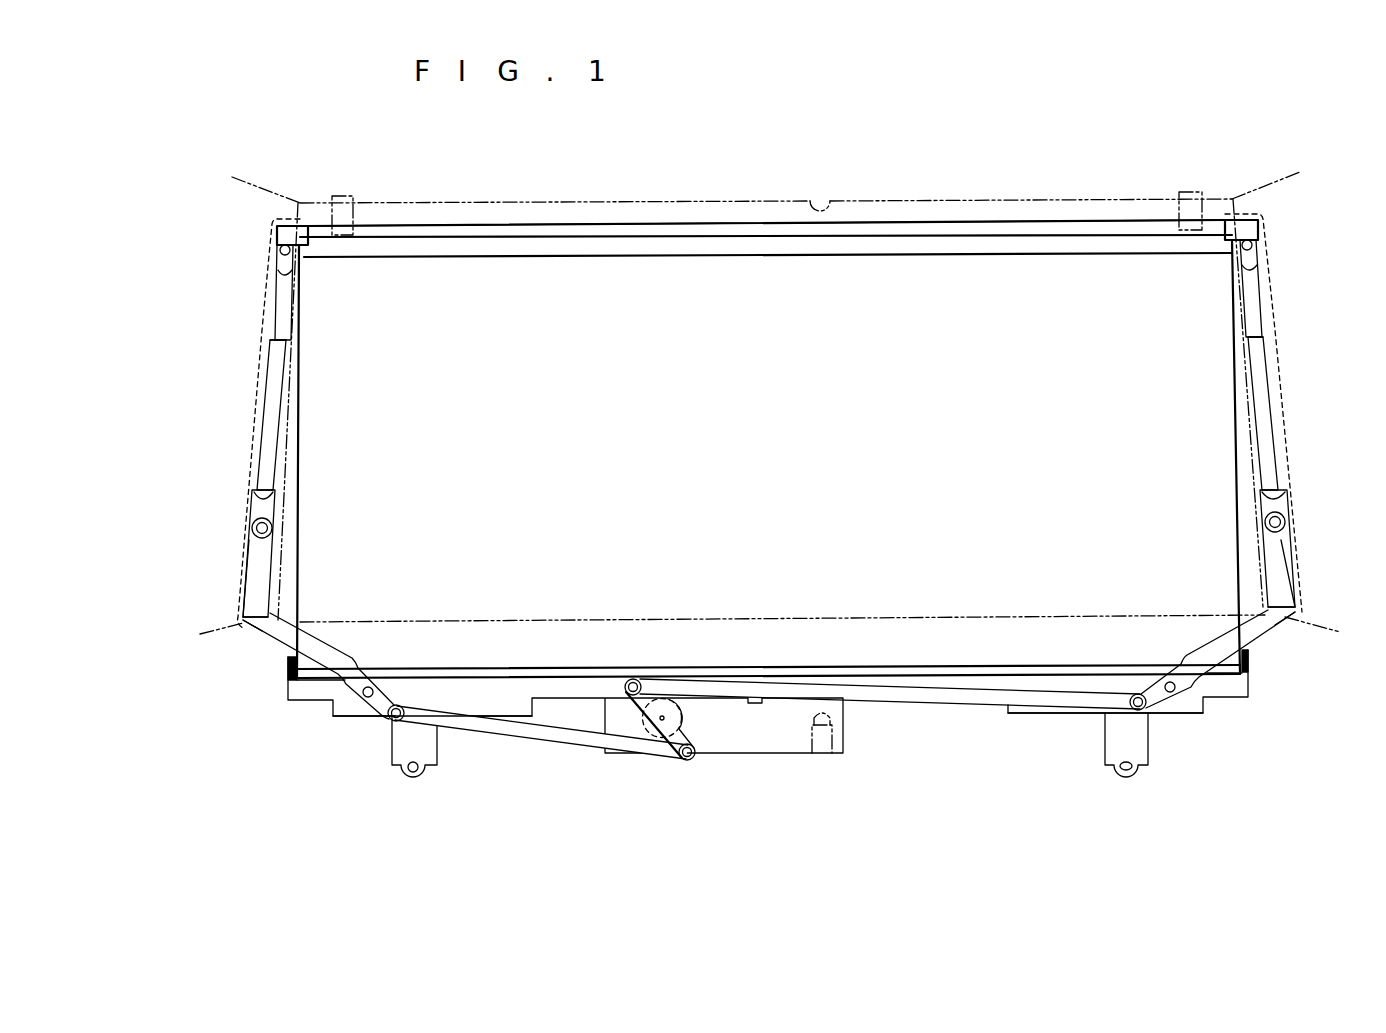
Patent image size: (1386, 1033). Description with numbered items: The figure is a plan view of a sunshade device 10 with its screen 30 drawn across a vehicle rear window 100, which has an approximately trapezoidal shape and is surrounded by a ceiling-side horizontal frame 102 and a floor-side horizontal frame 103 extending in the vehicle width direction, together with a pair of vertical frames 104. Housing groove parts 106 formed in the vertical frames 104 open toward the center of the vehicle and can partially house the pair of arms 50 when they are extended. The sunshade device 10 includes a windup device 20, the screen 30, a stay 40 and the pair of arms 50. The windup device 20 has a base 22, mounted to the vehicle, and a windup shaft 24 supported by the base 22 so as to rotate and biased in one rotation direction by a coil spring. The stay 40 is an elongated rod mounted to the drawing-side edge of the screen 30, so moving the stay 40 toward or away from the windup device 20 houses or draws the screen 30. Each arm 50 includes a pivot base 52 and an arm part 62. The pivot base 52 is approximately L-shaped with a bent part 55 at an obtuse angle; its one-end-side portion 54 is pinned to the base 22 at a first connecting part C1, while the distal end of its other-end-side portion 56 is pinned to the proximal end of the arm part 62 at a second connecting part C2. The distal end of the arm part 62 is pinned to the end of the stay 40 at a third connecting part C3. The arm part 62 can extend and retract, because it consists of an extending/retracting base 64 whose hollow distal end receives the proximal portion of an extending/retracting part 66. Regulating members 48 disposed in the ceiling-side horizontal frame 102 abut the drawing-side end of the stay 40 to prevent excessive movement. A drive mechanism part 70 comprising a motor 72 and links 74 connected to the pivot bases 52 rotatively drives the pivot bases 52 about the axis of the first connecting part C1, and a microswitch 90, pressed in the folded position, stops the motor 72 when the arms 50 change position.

The sunshade device 10 is at (482, 765).
The windup device 20 is at (286, 689).
The base 22 is at (1033, 715).
The windup shaft 24 is at (1232, 683).
The screen 30 is at (1237, 458).
The stay 40 is at (725, 224).
The regulating member 48 is at (336, 196).
The arm 50 is at (258, 421).
The pivot base 52 is at (241, 591).
The one-end-side portion 54 is at (345, 700).
The bent part 55 is at (238, 622).
The other-end-side portion 56 is at (246, 562).
The arm part 62 is at (266, 383).
The extending/retracting base 64 is at (258, 466).
The extending/retracting part 66 is at (276, 299).
The drive mechanism part 70 is at (572, 752).
The motor 72 is at (682, 703).
The link 74 is at (660, 755).
The microswitch 90 is at (810, 742).
The window 100 is at (925, 212).
The ceiling-side horizontal frame 102 is at (831, 201).
The floor-side horizontal frame 103 is at (1137, 615).
The vertical frame 104 is at (1258, 478).
The housing groove part 106 is at (262, 332).
The first connecting part C1 is at (373, 700).
The second connecting part C2 is at (258, 528).
The third connecting part C3 is at (279, 250).